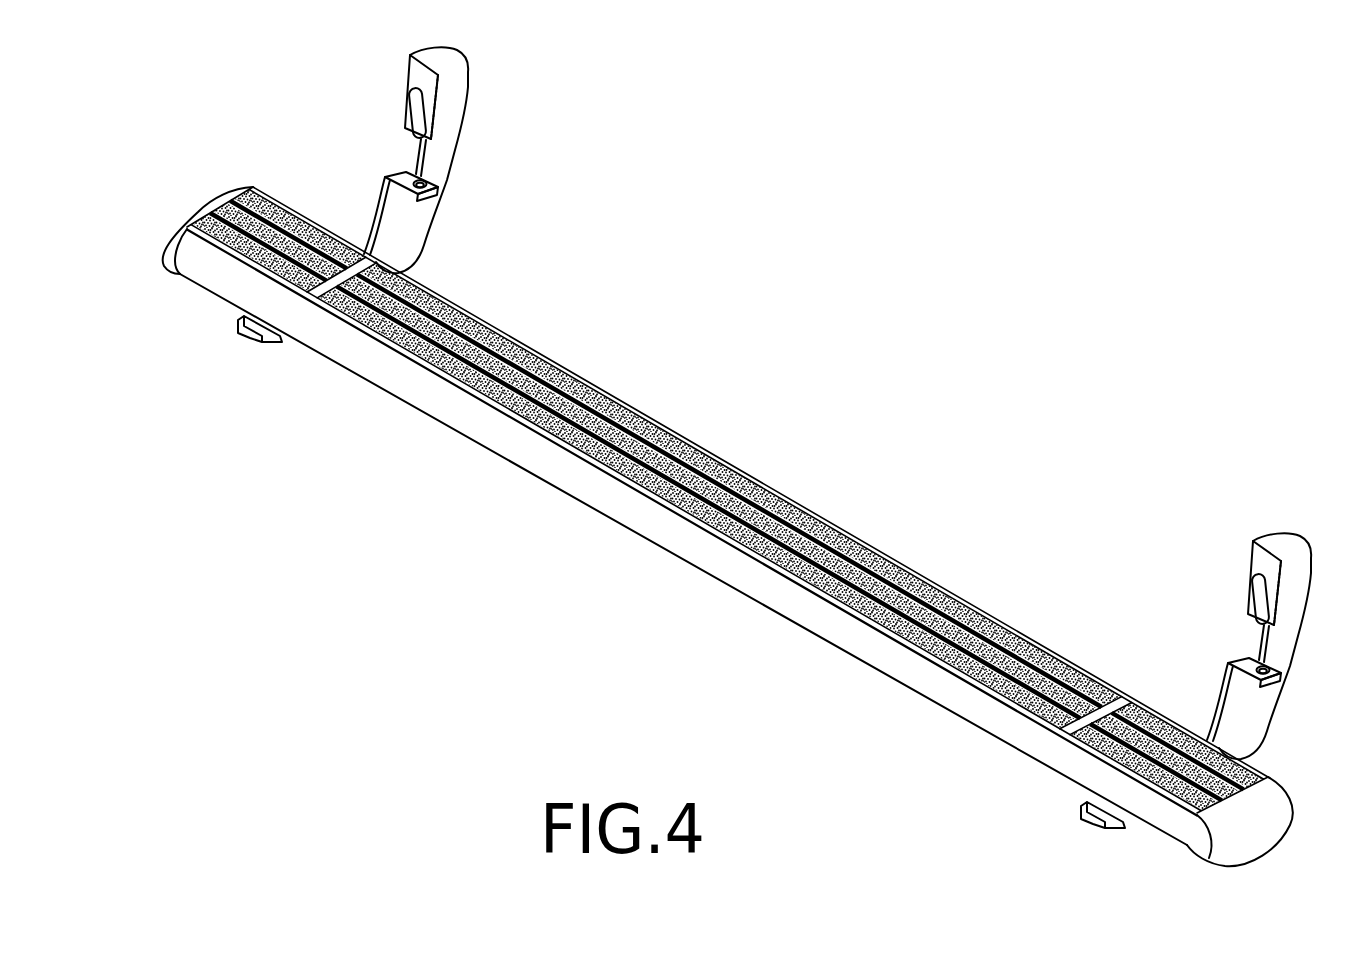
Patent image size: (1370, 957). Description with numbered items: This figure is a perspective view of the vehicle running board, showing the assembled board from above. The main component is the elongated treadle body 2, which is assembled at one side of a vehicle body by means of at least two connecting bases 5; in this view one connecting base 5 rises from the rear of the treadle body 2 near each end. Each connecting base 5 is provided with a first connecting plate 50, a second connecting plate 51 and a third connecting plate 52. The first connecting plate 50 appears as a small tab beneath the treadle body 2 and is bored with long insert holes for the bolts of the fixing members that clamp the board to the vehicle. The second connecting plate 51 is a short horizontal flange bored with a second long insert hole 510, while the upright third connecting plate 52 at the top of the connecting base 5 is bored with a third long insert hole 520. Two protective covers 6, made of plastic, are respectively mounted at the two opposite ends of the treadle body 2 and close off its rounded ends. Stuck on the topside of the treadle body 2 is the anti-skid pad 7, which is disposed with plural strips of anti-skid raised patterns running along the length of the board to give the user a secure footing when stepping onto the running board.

The treadle body 2 is at (620, 519).
The connecting base 5 is at (833, 403).
The first connecting plate 50 is at (257, 339).
The second connecting plate 51 is at (833, 429).
The second long insert hole 510 is at (436, 184).
The third connecting plate 52 is at (792, 340).
The third long insert hole 520 is at (413, 73).
The protective cover 6 is at (177, 226).
The anti-skid pad 7 is at (667, 438).